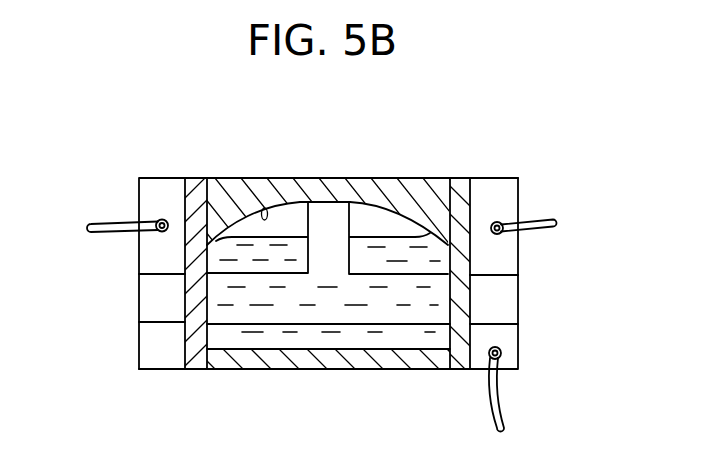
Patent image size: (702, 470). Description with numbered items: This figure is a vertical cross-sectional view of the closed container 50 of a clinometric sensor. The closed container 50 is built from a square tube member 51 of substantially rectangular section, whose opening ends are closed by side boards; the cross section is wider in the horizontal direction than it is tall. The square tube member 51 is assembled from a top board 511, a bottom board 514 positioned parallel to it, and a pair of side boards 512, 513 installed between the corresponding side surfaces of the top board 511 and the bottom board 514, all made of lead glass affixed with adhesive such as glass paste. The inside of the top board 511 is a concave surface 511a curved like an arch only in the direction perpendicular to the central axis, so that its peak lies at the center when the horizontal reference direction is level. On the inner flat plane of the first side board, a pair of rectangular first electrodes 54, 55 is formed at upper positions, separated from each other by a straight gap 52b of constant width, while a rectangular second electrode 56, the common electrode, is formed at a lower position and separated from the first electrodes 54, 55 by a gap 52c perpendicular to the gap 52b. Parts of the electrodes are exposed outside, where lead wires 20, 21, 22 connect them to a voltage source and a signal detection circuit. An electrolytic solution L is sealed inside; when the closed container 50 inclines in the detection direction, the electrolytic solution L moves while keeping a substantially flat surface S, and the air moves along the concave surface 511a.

The closed container 50 is at (116, 332).
The square tube member 51 is at (372, 178).
The top board 511 is at (425, 200).
The concave surface 511a is at (263, 209).
The side board 512 is at (197, 358).
The side board 513 is at (460, 363).
The bottom board 514 is at (308, 360).
The gap 52b is at (322, 260).
The gap 52c is at (497, 307).
The first electrode 54 is at (157, 196).
The first electrode 55 is at (492, 195).
The second electrode 56 is at (165, 347).
The lead wire 20 is at (103, 237).
The lead wire 21 is at (531, 212).
The lead wire 22 is at (503, 408).
The substantially flat surface S is at (321, 206).
The electrolytic solution L is at (413, 335).